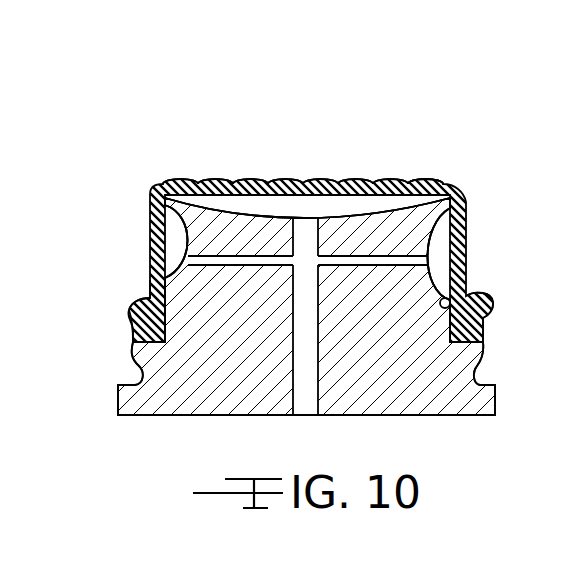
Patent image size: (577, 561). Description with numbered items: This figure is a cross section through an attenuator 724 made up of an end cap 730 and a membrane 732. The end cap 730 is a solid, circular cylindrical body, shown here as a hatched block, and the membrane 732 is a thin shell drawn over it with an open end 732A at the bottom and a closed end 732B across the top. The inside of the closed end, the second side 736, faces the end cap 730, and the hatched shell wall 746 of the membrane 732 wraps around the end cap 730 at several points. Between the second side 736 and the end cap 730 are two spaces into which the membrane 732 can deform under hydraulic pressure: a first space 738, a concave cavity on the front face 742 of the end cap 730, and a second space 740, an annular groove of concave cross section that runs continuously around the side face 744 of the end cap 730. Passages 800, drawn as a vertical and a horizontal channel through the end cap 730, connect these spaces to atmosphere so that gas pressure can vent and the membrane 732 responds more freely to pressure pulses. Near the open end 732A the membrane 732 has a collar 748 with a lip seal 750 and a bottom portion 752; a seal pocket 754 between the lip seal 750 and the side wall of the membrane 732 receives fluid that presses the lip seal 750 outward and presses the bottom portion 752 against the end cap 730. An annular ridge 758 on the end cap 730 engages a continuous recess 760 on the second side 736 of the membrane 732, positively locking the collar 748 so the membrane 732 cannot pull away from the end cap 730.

The attenuator 724 is at (288, 280).
The end cap 730 is at (288, 280).
The membrane 732 is at (288, 280).
The open end 732A is at (250, 340).
The closed end 732B is at (259, 158).
The second side 736 is at (299, 197).
The first space 738 is at (248, 182).
The second space 740 is at (150, 266).
The front face 742 is at (387, 181).
The side face 744 is at (430, 272).
The cap wall 746 is at (188, 178).
The collar 748 is at (483, 330).
The lip seal 750 is at (127, 306).
The bottom portion 752 is at (132, 343).
The seal pocket 754 is at (150, 302).
The ridge 758 is at (448, 302).
The recess 760 is at (478, 292).
The passages 800 is at (304, 398).